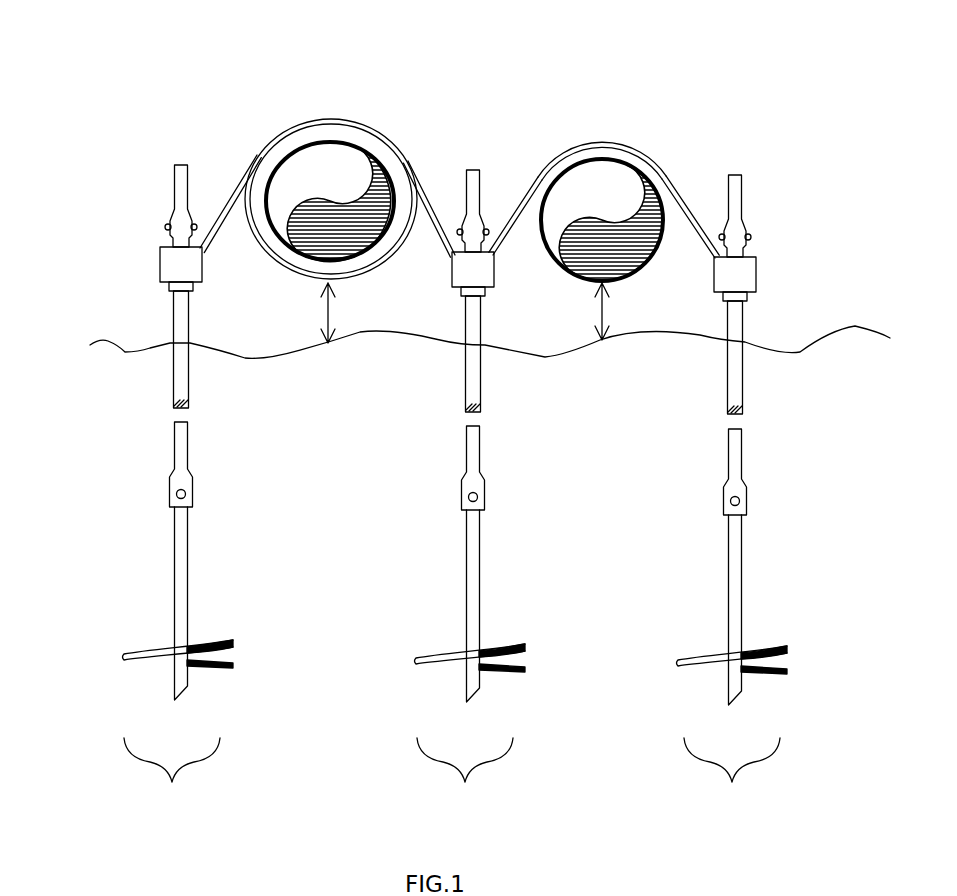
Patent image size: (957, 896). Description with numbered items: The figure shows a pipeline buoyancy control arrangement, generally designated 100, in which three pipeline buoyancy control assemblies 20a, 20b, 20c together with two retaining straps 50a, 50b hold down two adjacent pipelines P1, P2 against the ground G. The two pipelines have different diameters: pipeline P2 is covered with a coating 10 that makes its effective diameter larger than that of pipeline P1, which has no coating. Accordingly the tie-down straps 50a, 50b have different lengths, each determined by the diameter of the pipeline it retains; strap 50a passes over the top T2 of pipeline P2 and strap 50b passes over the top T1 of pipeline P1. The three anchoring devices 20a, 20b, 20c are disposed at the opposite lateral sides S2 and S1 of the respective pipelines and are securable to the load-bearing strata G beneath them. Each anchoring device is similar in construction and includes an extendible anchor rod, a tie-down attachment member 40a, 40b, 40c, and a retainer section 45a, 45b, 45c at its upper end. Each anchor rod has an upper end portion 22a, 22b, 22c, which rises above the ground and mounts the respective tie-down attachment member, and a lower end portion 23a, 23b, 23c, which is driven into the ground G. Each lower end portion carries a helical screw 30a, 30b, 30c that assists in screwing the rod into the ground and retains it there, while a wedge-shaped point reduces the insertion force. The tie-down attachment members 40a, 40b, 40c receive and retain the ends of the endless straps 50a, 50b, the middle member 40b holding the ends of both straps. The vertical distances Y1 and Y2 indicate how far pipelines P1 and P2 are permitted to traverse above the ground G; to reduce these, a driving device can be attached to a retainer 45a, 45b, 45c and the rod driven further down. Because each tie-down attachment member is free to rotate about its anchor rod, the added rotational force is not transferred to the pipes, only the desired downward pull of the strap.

The pipeline buoyancy control system 100 is at (862, 482).
The coating 10 is at (358, 137).
The pipeline buoyancy control assembly 20a is at (147, 479).
The pipeline buoyancy control assembly 20b is at (443, 468).
The pipeline buoyancy control assembly 20c is at (717, 497).
The upper end portion of anchor rod 22a is at (165, 380).
The upper end portion of anchor rod 22b is at (458, 390).
The upper end portion of anchor rod 22c is at (720, 388).
The lower end portion of anchor rod 23a is at (182, 580).
The lower end portion of anchor rod 23b is at (477, 602).
The lower end portion of anchor rod 23c is at (738, 602).
The helical screw 30a is at (120, 652).
The helical screw 30b is at (413, 657).
The helical screw 30c is at (678, 658).
The tie-down attachment member 40a is at (156, 272).
The tie-down attachment member 40b is at (450, 282).
The tie-down attachment member 40c is at (740, 277).
The retainer section 45a is at (178, 195).
The retainer section 45b is at (472, 200).
The retainer section 45c is at (732, 232).
The retaining strap 50a is at (412, 195).
The retaining strap 50b is at (690, 200).
The pipeline P1 is at (599, 178).
The pipeline P2 is at (322, 155).
The top of pipeline T1 is at (605, 163).
The top of pipeline T2 is at (318, 128).
The lateral side S1 is at (550, 215).
The lateral side S2 is at (248, 208).
The vertical distance Y1 is at (580, 311).
The vertical distance Y2 is at (306, 313).
The ground G is at (490, 364).